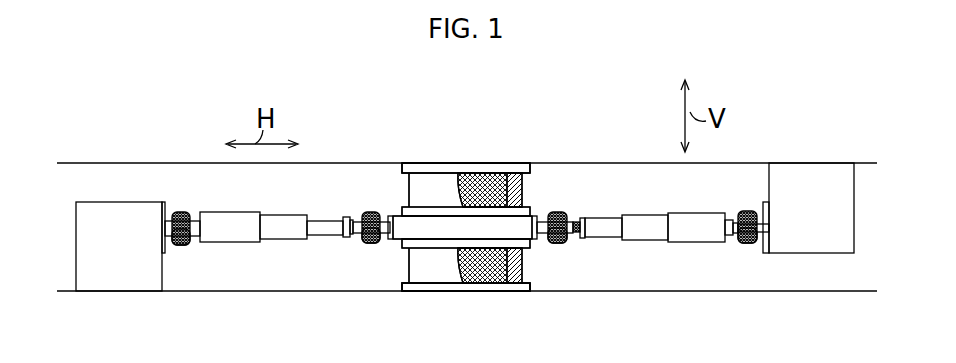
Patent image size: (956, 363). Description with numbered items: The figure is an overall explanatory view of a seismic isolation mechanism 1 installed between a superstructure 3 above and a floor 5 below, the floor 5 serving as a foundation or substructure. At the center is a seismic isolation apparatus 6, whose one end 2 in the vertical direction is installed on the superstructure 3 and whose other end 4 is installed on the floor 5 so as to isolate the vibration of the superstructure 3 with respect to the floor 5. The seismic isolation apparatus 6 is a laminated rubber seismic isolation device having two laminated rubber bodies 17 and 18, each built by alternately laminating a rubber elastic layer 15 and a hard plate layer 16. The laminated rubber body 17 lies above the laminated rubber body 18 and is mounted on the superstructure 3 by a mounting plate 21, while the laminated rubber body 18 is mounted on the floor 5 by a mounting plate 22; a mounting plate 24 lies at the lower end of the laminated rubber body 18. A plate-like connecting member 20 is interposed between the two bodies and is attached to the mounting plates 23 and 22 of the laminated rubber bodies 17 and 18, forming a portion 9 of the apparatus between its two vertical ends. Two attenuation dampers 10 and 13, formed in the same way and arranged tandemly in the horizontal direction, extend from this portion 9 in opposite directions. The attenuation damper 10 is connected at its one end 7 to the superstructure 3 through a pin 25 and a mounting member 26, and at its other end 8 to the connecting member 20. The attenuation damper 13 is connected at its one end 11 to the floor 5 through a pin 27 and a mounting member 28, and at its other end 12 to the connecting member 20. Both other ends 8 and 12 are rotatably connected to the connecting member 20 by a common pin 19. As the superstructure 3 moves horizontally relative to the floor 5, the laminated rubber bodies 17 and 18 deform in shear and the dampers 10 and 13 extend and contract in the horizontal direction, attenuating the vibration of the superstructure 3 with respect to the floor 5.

The seismic isolation mechanism 1 is at (398, 164).
The one end 2 is at (510, 172).
The superstructure 3 is at (333, 163).
The other end 4 is at (413, 290).
The floor 5 is at (268, 291).
The seismic isolation apparatus 6 is at (424, 162).
The one end 7 is at (748, 220).
The other end 8 is at (570, 238).
The portion 9 is at (503, 227).
The attenuation damper 10 is at (662, 209).
The one end 11 is at (181, 212).
The other end 12 is at (372, 243).
The attenuation damper 13 is at (254, 209).
The rubber elastic layer 15 is at (523, 175).
The hard plate layer 16 is at (528, 178).
The laminated rubber body 17 is at (453, 177).
The laminated rubber body 18 is at (435, 273).
The pin 19 is at (362, 245).
The connecting member 20 is at (518, 232).
The mounting plate 21 is at (443, 170).
The mounting plate 22 is at (450, 243).
The mounting plate 23 is at (472, 213).
The mounting plate 24 is at (520, 288).
The pin 25 is at (747, 243).
The mounting member 26 is at (813, 182).
The pin 27 is at (183, 245).
The mounting member 28 is at (117, 273).